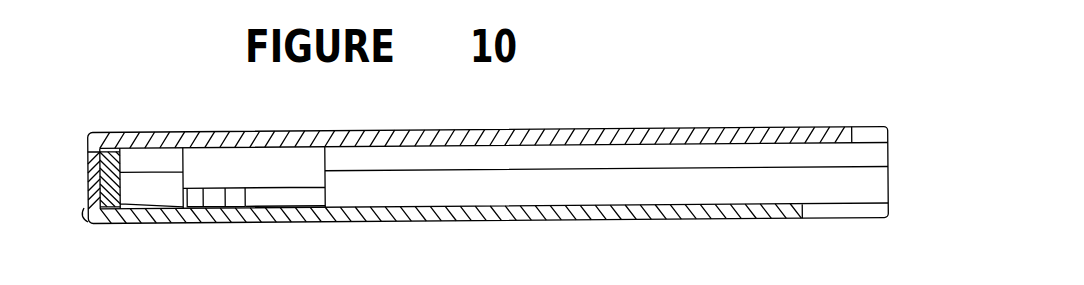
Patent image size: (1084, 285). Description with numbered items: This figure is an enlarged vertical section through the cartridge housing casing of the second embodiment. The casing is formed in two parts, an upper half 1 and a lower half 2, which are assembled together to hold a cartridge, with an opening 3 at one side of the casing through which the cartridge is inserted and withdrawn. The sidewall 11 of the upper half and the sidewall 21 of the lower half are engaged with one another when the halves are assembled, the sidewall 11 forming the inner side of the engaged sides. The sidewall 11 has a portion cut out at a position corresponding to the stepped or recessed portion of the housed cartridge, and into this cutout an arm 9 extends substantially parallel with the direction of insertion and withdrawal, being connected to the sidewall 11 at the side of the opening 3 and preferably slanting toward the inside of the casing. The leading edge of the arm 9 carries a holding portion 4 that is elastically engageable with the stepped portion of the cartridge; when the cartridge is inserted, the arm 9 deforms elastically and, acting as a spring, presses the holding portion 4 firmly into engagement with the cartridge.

The upper half 1 is at (573, 140).
The lower half 2 is at (545, 209).
The opening 3 is at (897, 176).
The holding portion 4 is at (215, 198).
The arm 9 is at (275, 198).
The sidewall of the upper half 11 is at (113, 176).
The sidewall of the lower half 21 is at (84, 212).